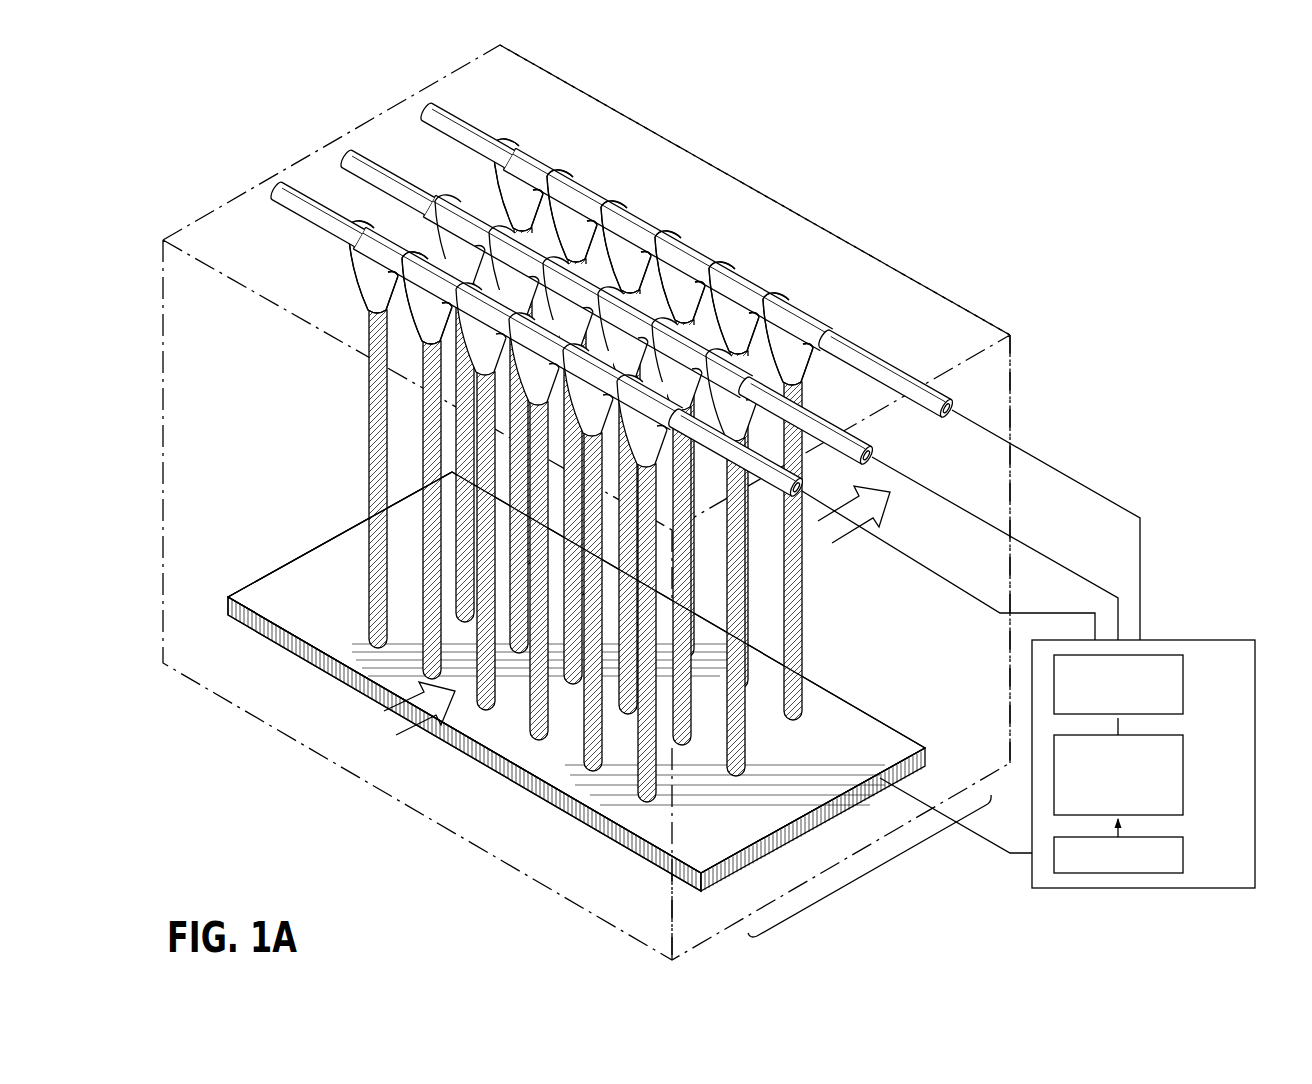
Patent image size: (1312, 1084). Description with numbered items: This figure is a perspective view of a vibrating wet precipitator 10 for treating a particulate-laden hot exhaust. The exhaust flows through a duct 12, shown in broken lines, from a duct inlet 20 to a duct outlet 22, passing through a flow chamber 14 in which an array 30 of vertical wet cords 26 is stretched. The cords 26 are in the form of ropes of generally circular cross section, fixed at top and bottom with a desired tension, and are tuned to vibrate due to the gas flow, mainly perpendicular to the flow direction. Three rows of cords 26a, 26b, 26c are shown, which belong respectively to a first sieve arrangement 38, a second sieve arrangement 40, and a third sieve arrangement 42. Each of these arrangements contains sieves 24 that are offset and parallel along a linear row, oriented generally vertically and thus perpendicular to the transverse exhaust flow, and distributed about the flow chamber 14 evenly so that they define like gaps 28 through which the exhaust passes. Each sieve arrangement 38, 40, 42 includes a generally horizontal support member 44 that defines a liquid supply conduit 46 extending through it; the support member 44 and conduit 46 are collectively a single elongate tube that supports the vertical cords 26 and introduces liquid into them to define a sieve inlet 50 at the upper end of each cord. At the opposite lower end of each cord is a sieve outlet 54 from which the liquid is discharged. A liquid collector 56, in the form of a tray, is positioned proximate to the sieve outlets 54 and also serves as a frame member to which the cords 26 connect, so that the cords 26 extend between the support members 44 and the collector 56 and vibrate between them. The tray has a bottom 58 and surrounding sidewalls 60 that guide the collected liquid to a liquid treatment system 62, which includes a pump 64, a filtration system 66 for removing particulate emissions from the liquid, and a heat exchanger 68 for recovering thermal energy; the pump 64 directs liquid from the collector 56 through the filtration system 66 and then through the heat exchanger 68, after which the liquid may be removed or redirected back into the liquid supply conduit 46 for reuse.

The vibrating wet precipitator 10 is at (1060, 162).
The duct 12 is at (690, 150).
The flow chamber 14 is at (411, 794).
The duct inlet 20 is at (162, 631).
The duct outlet 22 is at (1013, 354).
The sieve 24 is at (365, 299).
The elongated cord 26 is at (428, 553).
The first row of cords 26a is at (356, 456).
The second row of cords 26b is at (750, 720).
The third row of cords 26c is at (810, 646).
The gap 28 is at (713, 603).
The array 30 is at (869, 866).
The first sieve arrangement 38 is at (281, 190).
The second sieve arrangement 40 is at (355, 150).
The third sieve arrangement 42 is at (427, 97).
The support member 44 is at (465, 110).
The liquid supply conduit 46 is at (954, 410).
The sieve inlet 50 is at (428, 352).
The sieve outlet 54 is at (428, 668).
The liquid collector 56 is at (521, 791).
The bottom 58 is at (311, 598).
The sidewall 60 is at (246, 593).
The liquid treatment system 62 is at (1123, 767).
The pump 64 is at (1158, 874).
The filtration system 66 is at (1054, 762).
The heat exchanger 68 is at (1054, 690).